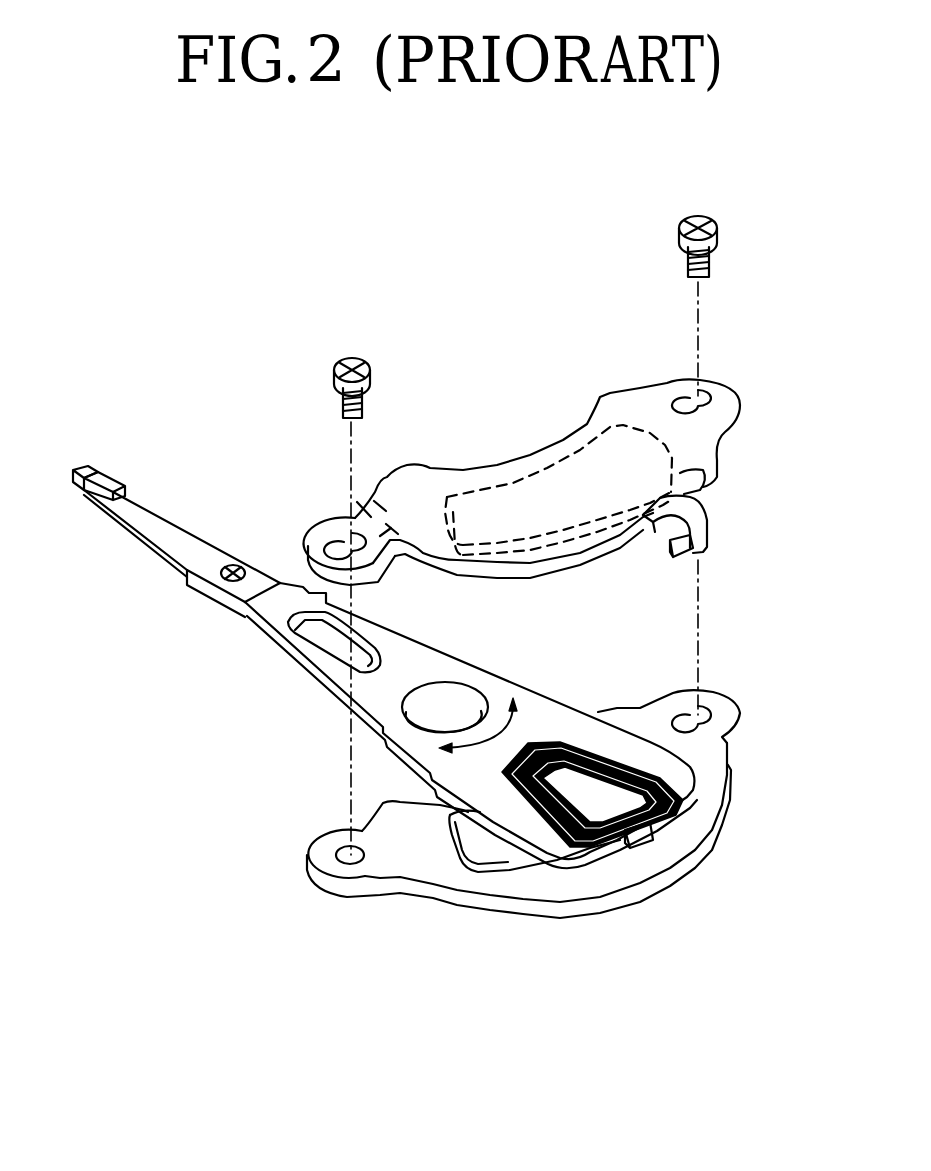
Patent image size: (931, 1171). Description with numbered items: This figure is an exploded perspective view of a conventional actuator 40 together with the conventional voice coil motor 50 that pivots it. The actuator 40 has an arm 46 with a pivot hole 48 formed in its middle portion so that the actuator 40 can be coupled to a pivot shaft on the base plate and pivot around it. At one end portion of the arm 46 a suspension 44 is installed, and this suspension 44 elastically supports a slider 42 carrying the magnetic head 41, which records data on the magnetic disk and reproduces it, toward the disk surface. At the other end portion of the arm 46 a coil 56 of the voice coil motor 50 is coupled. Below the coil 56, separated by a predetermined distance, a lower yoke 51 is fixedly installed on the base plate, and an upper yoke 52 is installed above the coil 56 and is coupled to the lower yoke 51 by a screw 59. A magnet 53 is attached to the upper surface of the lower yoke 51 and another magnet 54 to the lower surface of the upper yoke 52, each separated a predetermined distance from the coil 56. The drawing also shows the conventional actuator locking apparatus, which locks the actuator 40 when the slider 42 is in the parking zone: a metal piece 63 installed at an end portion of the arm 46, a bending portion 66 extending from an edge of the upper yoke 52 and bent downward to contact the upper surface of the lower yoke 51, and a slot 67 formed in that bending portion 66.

The actuator 40 is at (238, 700).
The magnetic head 41 is at (85, 470).
The slider 42 is at (105, 487).
The suspension 44 is at (212, 553).
The arm 46 is at (398, 650).
The pivot hole 48 is at (448, 705).
The voice coil motor 50 is at (562, 398).
The lower yoke 51 is at (433, 867).
The upper yoke 52 is at (443, 480).
The magnet 53 is at (503, 845).
The magnet 54 is at (538, 470).
The coil 56 is at (555, 745).
The screw 59 is at (690, 258).
The metal piece 63 is at (648, 820).
The bending portion 66 is at (700, 520).
The slot 67 is at (690, 545).